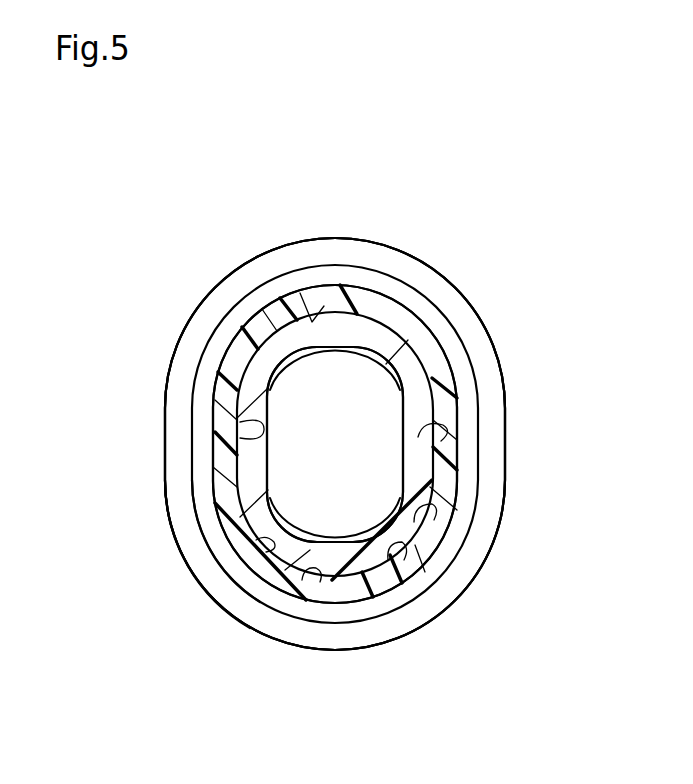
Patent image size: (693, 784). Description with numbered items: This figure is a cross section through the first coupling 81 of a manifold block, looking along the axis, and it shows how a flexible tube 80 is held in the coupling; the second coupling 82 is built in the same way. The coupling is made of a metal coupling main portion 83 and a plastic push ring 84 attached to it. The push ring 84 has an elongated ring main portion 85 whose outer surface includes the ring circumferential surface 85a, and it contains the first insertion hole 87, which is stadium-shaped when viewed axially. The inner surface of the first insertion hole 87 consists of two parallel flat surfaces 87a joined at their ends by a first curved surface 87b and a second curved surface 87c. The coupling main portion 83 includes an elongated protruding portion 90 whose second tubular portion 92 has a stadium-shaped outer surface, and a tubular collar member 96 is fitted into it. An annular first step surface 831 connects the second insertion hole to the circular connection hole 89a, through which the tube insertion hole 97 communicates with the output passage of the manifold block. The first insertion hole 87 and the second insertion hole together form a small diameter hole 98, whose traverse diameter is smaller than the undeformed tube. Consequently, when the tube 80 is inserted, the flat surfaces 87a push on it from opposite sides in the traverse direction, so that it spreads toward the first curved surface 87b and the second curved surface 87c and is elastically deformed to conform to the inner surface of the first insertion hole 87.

The tube 80 is at (383, 330).
The first coupling 81 is at (200, 252).
The second coupling 82 is at (335, 444).
The coupling main portion 83 is at (233, 271).
The first step surface 831 is at (349, 345).
The push ring 84 is at (440, 340).
The ring main portion 85 is at (256, 558).
The ring circumferential surface 85a is at (243, 331).
The first insertion hole 87 is at (430, 508).
The flat surfaces 87a is at (240, 425).
The first curved surface 87b is at (306, 310).
The second curved surface 87c is at (305, 580).
The connection hole 89a is at (297, 352).
The protruding portion 90 is at (172, 548).
The second tubular portion 92 is at (194, 576).
The collar member 96 is at (446, 344).
The tube insertion hole 97 is at (428, 560).
The small diameter hole 98 is at (252, 552).